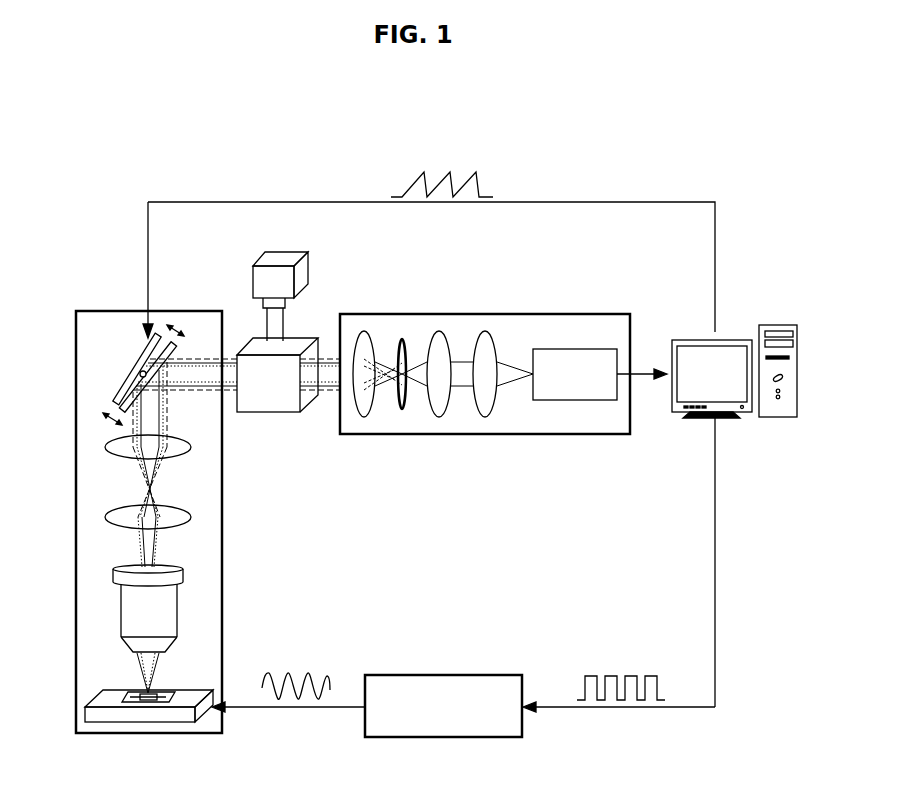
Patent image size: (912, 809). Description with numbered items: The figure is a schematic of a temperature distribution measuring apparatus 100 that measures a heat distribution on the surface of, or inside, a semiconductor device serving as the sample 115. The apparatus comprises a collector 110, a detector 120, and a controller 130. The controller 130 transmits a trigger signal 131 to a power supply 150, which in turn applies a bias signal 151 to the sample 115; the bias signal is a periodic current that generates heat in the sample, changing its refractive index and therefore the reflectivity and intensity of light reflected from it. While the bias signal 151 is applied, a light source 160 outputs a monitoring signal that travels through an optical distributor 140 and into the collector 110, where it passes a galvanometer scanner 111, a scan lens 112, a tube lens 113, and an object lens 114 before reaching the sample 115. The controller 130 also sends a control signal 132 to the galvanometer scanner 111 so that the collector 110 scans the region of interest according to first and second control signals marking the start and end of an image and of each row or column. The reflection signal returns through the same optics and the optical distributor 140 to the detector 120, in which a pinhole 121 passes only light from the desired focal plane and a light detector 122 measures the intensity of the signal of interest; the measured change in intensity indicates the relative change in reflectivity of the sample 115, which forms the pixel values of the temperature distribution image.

The temperature distribution measuring apparatus 100 is at (440, 91).
The collector 110 is at (170, 311).
The galvanometer scanner 111 is at (128, 390).
The scan lens 112 is at (123, 441).
The tube lens 113 is at (124, 512).
The object lens 114 is at (123, 570).
The sample 115 is at (140, 692).
The detector 120 is at (485, 376).
The pinhole 121 is at (404, 409).
The light detector 122 is at (576, 400).
The controller 130 is at (735, 340).
The trigger signal 131 is at (610, 675).
The control signal 132 is at (450, 172).
The optical distributor 140 is at (278, 412).
The power supply 150 is at (443, 675).
The bias signal 151 is at (302, 665).
The light source 160 is at (296, 257).